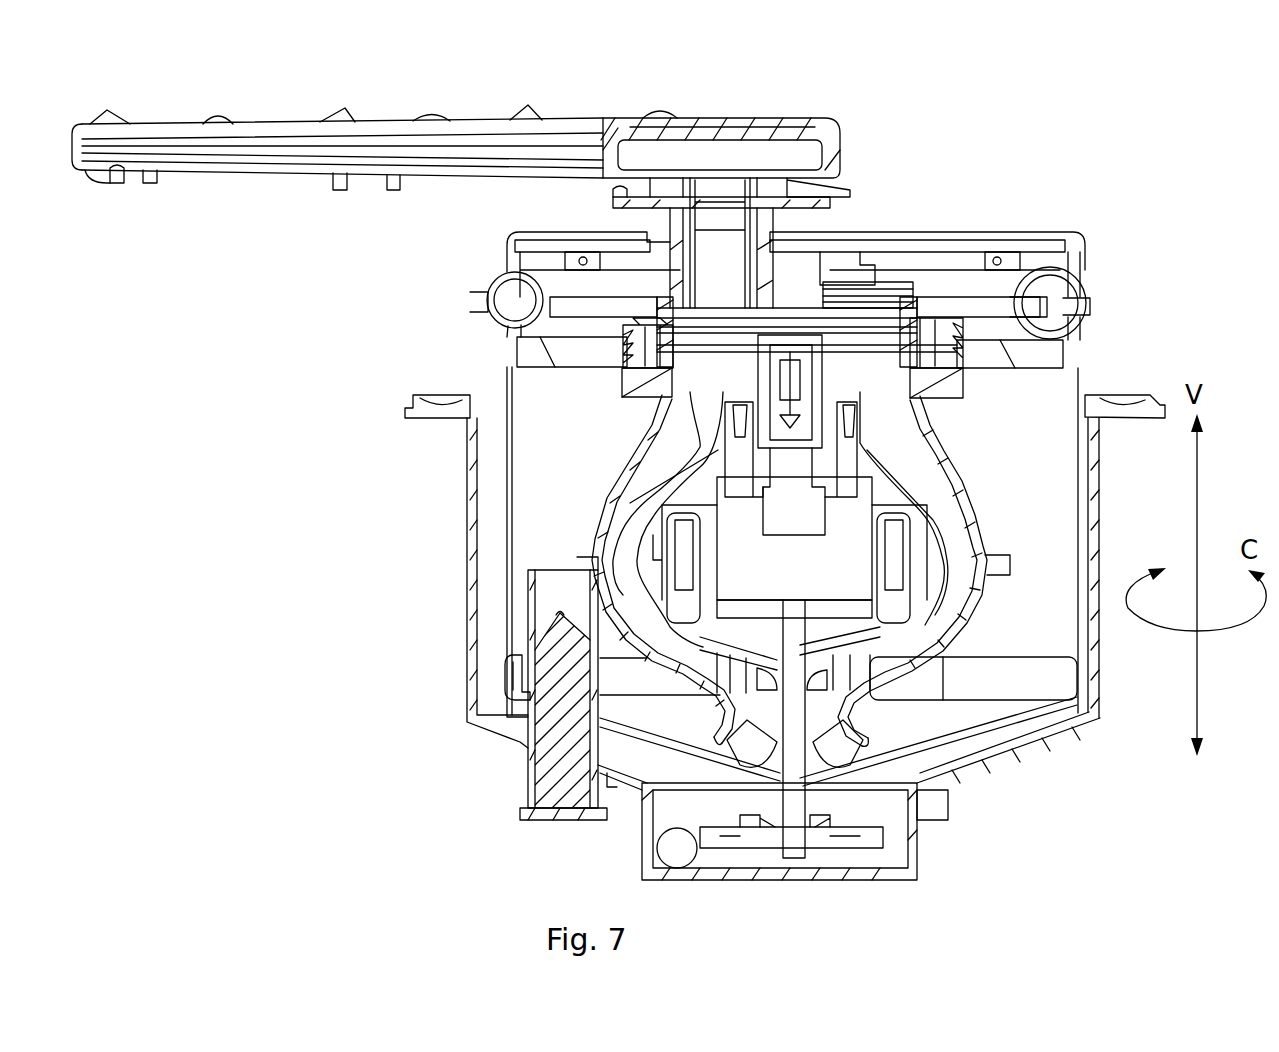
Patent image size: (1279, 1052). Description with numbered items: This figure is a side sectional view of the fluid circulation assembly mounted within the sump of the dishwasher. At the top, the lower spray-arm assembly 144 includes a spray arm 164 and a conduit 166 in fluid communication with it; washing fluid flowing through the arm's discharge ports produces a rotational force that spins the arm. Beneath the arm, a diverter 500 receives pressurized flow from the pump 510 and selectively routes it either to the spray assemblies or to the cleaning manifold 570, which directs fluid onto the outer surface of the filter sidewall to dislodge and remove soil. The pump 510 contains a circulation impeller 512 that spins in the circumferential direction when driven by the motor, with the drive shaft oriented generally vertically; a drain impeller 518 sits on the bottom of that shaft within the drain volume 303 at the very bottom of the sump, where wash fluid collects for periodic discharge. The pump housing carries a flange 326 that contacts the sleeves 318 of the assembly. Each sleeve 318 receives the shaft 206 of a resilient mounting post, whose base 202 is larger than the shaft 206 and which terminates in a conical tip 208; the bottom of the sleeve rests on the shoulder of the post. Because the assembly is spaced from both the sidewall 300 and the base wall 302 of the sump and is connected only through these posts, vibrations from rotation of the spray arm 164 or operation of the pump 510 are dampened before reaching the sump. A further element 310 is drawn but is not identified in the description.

The spray arm 164 is at (265, 128).
The lower spray-arm assembly 144 is at (243, 197).
The conduit 166 is at (833, 200).
The cleaning manifold 570 is at (485, 297).
The diverter 500 is at (660, 345).
The pump 510 is at (917, 470).
The flange 326 is at (1000, 567).
The circulation impeller 512 is at (857, 648).
The sidewall 300 is at (473, 573).
The base wall 302 is at (987, 767).
The sleeve 318 is at (530, 622).
The base 202 is at (557, 760).
The conical tip 208 is at (560, 612).
The shaft 206 is at (577, 672).
The filter base 310 is at (567, 817).
The drain volume 303 is at (713, 845).
The drain impeller 518 is at (870, 835).